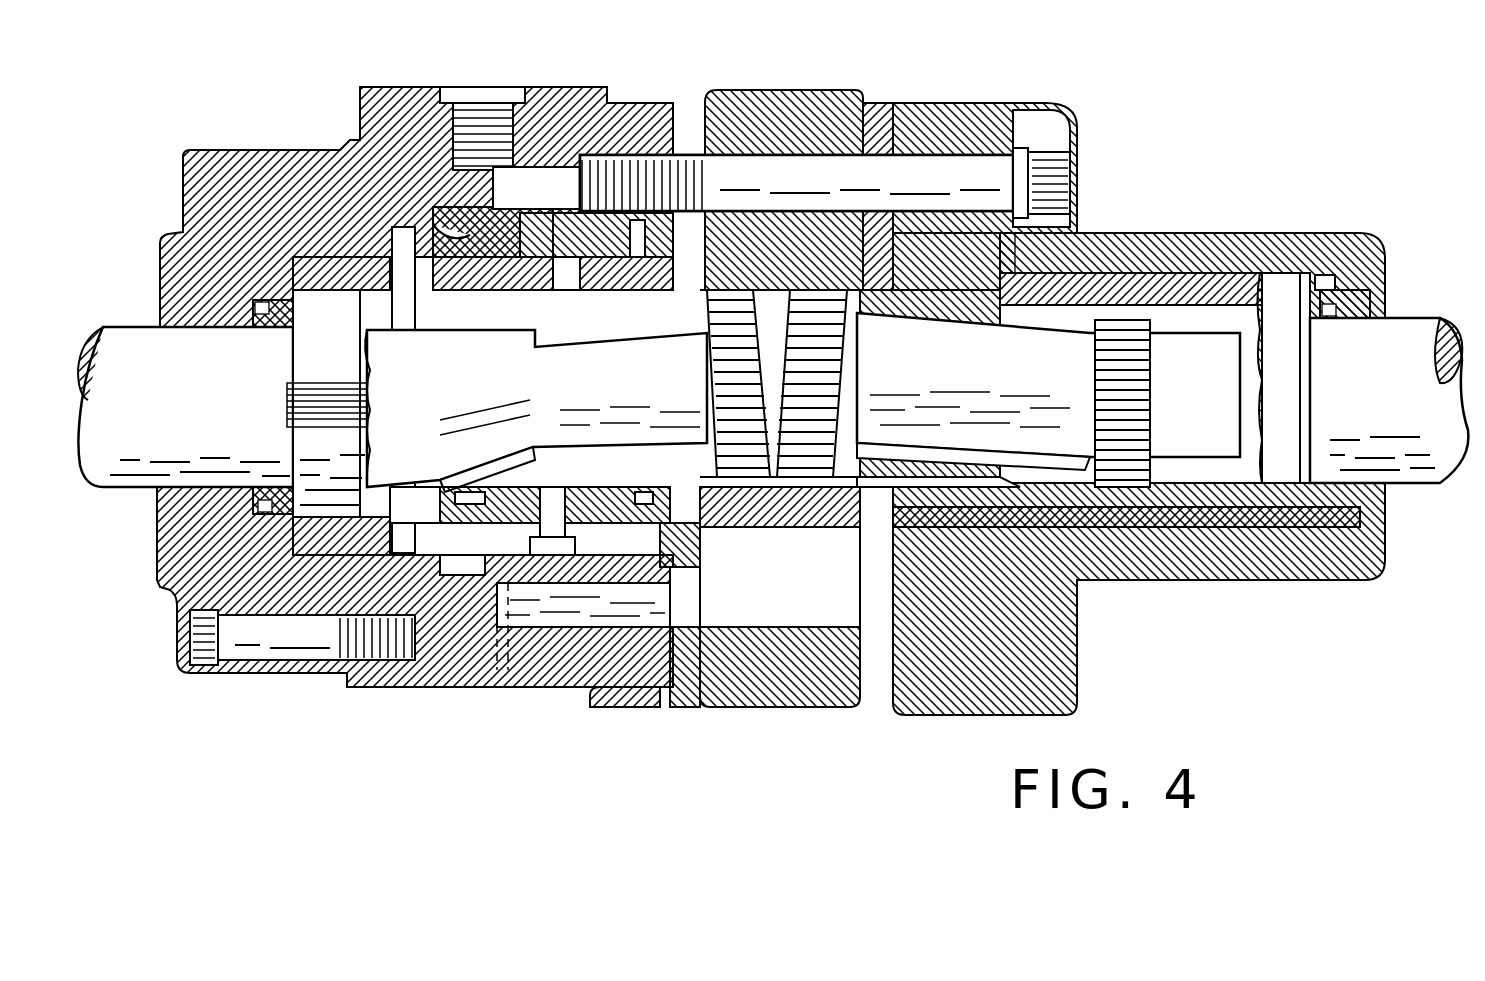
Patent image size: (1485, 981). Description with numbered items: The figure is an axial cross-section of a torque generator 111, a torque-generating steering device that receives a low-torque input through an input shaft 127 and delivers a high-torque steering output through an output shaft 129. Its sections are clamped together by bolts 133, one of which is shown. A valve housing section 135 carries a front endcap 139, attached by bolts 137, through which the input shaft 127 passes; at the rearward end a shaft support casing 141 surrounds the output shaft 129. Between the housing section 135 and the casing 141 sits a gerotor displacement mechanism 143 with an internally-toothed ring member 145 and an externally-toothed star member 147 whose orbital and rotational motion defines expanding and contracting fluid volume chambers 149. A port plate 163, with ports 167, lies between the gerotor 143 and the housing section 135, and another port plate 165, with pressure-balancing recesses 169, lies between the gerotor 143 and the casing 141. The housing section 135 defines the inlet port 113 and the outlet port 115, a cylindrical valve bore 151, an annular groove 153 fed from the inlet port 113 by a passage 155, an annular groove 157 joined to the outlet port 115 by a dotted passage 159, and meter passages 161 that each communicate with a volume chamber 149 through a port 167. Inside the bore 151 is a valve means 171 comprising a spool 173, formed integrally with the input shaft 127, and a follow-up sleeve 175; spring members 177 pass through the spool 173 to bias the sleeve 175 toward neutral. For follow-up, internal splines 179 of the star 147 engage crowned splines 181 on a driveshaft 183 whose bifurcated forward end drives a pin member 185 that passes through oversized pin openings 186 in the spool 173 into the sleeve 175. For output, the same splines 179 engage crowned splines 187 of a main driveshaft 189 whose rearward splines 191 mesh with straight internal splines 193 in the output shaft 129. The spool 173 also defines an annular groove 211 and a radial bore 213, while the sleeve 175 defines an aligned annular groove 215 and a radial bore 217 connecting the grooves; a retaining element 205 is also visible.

The torque generator 111 is at (1076, 86).
The inlet port 113 is at (498, 125).
The outlet port 115 is at (500, 670).
The input shaft 127 is at (105, 490).
The output shaft 129 is at (1432, 488).
The bolts 133 is at (1075, 190).
The valve housing section 135 is at (400, 130).
The bolts 137 is at (260, 645).
The front endcap 139 is at (205, 205).
The shaft support casing 141 is at (1205, 240).
The gerotor displacement mechanism 143 is at (768, 80).
The ring member 145 is at (780, 695).
The star member 147 is at (795, 505).
The fluid volume chambers 149 is at (780, 577).
The valve bore 151 is at (400, 260).
The annular groove 153 is at (548, 255).
The passage 155 is at (545, 195).
The annular groove 157 is at (462, 245).
The passage 159 is at (460, 600).
The meter passages 161 is at (548, 605).
The port plate 163 is at (690, 705).
The port plate 165 is at (872, 130).
The ports 167 is at (700, 605).
The recesses 169 is at (895, 600).
The valve means 171 is at (283, 258).
The spool valve member 173 is at (522, 478).
The sleeve valve member 175 is at (582, 320).
The spring members 177 is at (287, 400).
The internal splines 179 is at (858, 465).
The external splines 181 is at (700, 425).
The driveshaft 183 is at (536, 408).
The pin member 185 is at (400, 515).
The pin openings 186 is at (430, 322).
The external splines 187 is at (820, 362).
The main driveshaft 189 is at (1048, 385).
The external splines 191 is at (1100, 355).
The internal splines 193 is at (1000, 495).
The retaining ring 205 is at (480, 330).
The annular groove 211 is at (593, 500).
The radial bore 213 is at (650, 318).
The annular groove 215 is at (637, 268).
The radial bore 217 is at (583, 605).